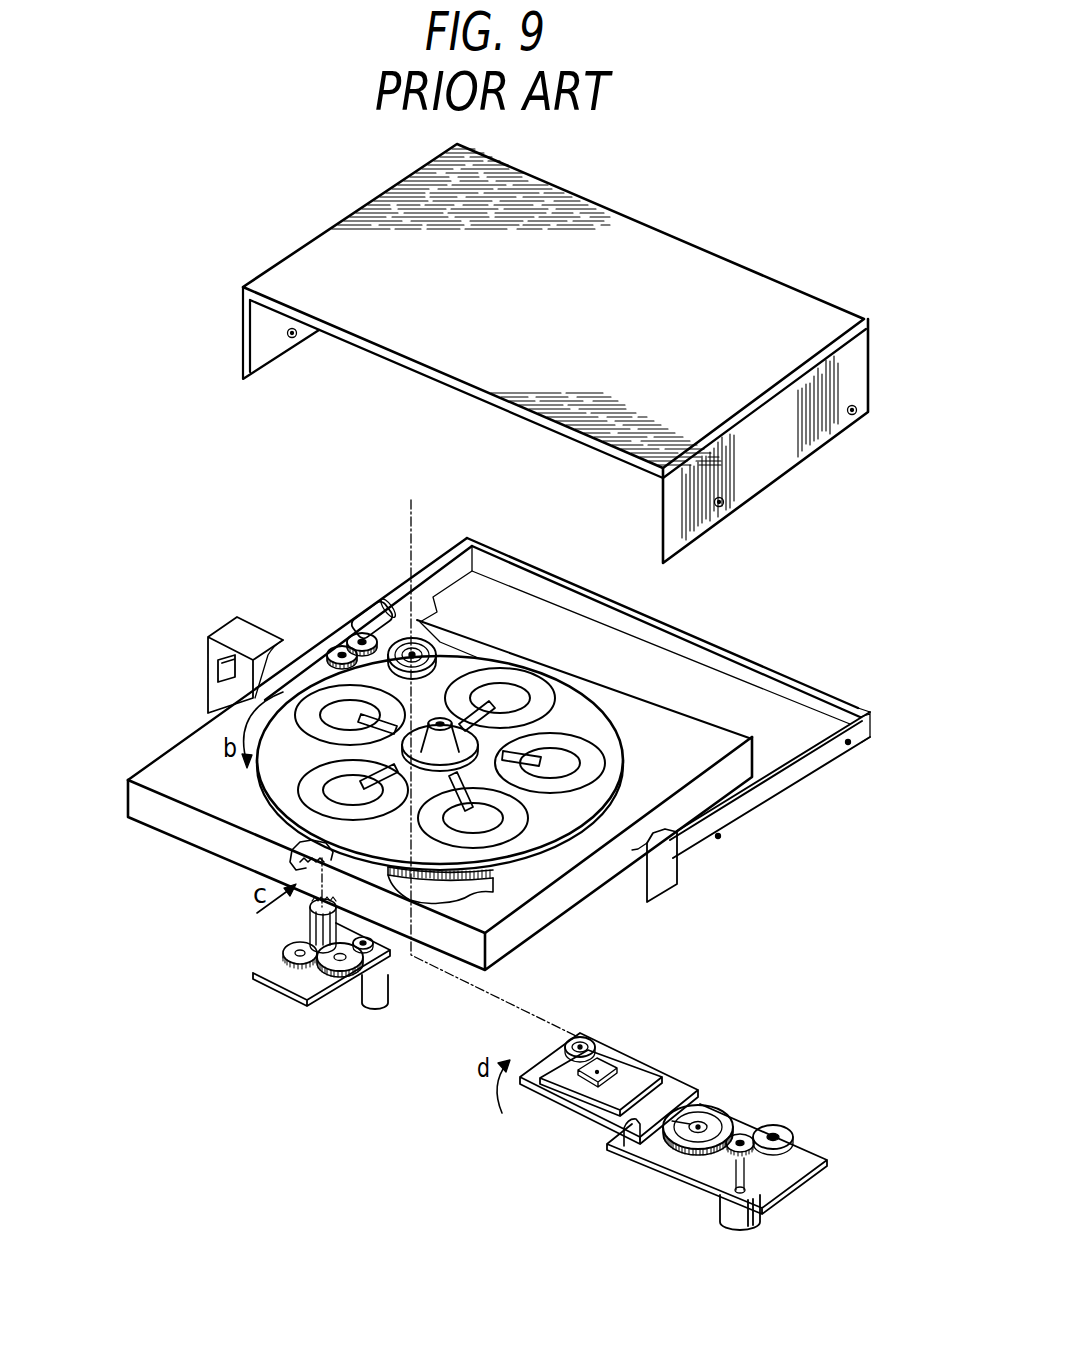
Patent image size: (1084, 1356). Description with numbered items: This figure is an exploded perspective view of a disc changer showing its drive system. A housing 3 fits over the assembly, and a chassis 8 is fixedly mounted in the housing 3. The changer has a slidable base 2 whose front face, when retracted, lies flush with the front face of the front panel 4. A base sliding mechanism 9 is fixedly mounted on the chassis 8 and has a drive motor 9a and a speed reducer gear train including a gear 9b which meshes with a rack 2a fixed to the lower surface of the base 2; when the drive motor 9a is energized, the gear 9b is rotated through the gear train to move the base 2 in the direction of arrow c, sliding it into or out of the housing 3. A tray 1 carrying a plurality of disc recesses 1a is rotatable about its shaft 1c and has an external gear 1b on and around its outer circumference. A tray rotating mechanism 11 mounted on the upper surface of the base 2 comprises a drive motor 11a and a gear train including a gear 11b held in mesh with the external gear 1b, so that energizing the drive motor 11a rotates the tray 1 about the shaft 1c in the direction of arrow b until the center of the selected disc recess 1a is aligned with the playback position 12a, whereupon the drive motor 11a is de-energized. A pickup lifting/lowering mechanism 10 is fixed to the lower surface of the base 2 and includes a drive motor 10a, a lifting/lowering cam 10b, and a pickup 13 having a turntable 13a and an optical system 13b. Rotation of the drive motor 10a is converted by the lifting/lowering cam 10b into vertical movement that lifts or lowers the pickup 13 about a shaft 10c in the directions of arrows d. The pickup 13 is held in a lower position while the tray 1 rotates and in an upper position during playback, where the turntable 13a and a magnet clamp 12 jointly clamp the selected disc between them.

The tray 1 is at (580, 807).
The disc recess 1a is at (317, 793).
The external gear 1b is at (470, 898).
The shaft 1c is at (440, 712).
The base 2 is at (582, 887).
The rack 2a is at (287, 857).
The housing 3 is at (769, 478).
The front panel 4 is at (667, 867).
The chassis 8 is at (808, 775).
The base sliding mechanism 9 is at (327, 997).
The drive motor 9a is at (372, 1005).
The gear 9b is at (293, 940).
The pickup lifting/lowering mechanism 10 is at (687, 1170).
The drive motor 10a is at (733, 1217).
The lifting/lowering cam 10b is at (732, 1107).
The shaft 10c is at (627, 1130).
The tray rotating mechanism 11 is at (393, 607).
The drive motor 11a is at (370, 617).
The gear 11b is at (320, 637).
The magnet clamp 12 is at (453, 627).
The playback position 12a is at (403, 533).
The pickup 13 is at (637, 1080).
The turntable 13a is at (573, 1040).
The optical system 13b is at (552, 1100).